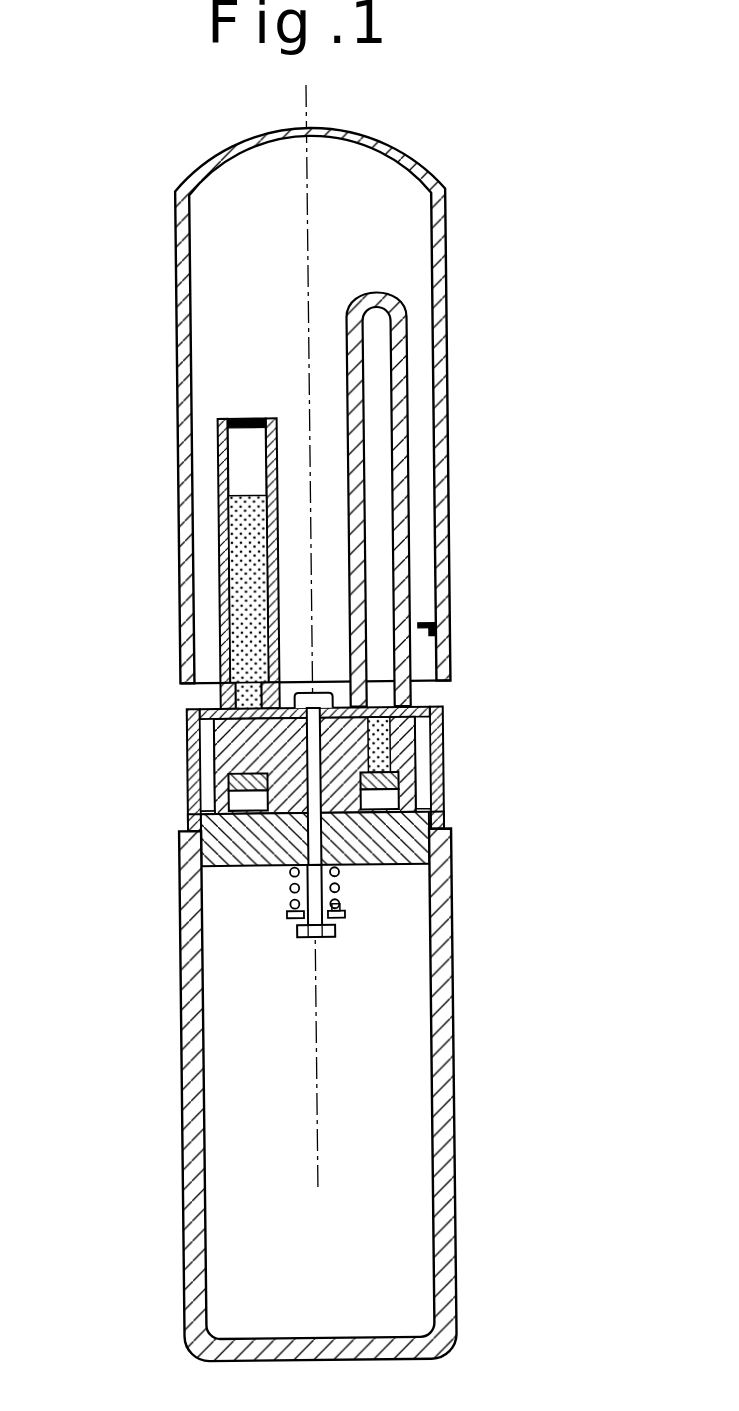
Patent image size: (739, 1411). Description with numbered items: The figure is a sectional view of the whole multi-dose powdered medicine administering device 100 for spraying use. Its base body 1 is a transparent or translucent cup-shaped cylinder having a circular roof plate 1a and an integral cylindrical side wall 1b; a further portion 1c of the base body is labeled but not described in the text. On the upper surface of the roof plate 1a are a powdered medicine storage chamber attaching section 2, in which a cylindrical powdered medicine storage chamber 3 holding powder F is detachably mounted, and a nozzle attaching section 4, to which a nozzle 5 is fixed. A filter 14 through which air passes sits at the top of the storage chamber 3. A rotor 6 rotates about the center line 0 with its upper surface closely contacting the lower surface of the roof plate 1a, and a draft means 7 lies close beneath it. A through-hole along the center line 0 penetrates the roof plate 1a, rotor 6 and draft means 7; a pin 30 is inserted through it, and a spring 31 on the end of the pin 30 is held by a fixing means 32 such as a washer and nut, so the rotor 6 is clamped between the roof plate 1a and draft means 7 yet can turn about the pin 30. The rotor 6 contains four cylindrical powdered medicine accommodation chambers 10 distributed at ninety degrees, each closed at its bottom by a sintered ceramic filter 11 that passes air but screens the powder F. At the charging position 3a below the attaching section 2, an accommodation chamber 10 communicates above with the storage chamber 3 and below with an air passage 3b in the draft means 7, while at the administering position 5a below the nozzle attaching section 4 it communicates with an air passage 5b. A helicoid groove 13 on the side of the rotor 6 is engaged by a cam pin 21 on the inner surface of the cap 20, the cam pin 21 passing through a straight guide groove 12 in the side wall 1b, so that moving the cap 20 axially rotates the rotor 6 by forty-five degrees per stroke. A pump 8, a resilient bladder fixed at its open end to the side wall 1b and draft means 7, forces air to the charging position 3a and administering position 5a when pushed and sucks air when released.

The multi-dose powdered medicine administering device 100 is at (476, 646).
The center line 0 is at (312, 95).
The cap 20 is at (446, 301).
The cam pin 21 is at (429, 624).
The nozzle 5 is at (367, 292).
The powdered medicine storage chamber 3 is at (222, 448).
The filter 14 is at (244, 417).
The powdered medicine F is at (238, 525).
The powdered medicine storage chamber attaching section 2 is at (228, 700).
The base body 1 is at (187, 767).
The straight guide groove 12 is at (437, 772).
The top plate 1c is at (187, 710).
The helicoid groove 13 is at (440, 719).
The circular roof plate 1a is at (285, 655).
The powdered medicine accommodation chamber 10 is at (198, 745).
The filter 11 is at (205, 788).
The cylindrical side wall 1b is at (190, 803).
The draft means 7 is at (200, 815).
The rotor 6 is at (395, 742).
The charging position 3a is at (252, 818).
The air passage 3b is at (248, 808).
The administering position 5a is at (378, 792).
The air passage 5b is at (379, 858).
The nozzle attaching section 4 is at (402, 700).
The fixing means 32 is at (298, 938).
The pin 30 is at (288, 918).
The spring 31 is at (341, 897).
The pump 8 is at (448, 1140).